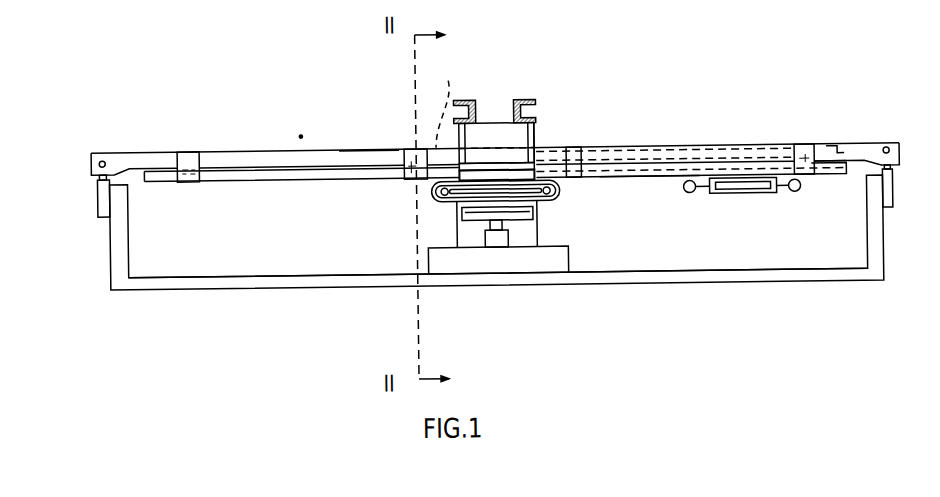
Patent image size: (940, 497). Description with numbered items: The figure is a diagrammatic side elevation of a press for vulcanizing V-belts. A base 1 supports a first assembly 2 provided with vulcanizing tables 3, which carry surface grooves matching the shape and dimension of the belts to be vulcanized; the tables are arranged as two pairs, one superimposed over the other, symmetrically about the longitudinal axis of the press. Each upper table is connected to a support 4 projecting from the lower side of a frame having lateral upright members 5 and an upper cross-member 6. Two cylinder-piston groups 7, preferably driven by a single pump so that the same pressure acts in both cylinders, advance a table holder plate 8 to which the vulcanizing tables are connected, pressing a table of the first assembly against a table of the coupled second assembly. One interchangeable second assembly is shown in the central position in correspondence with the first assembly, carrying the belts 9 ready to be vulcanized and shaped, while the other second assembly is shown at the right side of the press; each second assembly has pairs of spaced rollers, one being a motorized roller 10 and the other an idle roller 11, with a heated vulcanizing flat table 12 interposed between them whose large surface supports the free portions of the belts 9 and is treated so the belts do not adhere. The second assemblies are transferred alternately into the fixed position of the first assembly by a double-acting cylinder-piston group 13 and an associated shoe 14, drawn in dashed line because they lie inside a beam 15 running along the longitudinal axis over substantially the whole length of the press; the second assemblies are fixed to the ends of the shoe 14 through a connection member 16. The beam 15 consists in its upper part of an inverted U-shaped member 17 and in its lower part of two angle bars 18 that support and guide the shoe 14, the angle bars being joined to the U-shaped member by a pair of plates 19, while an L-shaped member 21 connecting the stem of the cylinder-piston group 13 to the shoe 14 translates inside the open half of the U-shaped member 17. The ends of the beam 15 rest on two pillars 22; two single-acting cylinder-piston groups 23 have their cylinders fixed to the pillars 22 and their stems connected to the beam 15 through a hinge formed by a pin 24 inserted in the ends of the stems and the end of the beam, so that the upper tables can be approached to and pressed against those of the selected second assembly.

The base 1 is at (499, 304).
The first assembly 2 is at (540, 142).
The vulcanizing tables 3 is at (540, 160).
The support 4 is at (512, 133).
The lateral upright members 5 is at (541, 128).
The upper cross-member 6 is at (477, 120).
The cylinder-piston groups 7 is at (500, 247).
The table holder plate 8 is at (523, 221).
The belts 9 is at (556, 196).
The motorized roller 10 is at (550, 201).
The idle roller 11 is at (436, 197).
The vulcanizing flat table 12 is at (460, 215).
The double-acting cylinder-piston group 13 is at (665, 150).
The shoe 14 is at (650, 178).
The beam 15 is at (300, 148).
The connection member 16 is at (723, 181).
The inverted U-shaped member 17 is at (360, 151).
The angle bars 18 is at (272, 176).
The plates 19 is at (190, 148).
The L-shaped member 21 is at (437, 104).
The pillars 22 is at (118, 246).
The cylinder-piston groups 23 is at (101, 192).
The pin 24 is at (105, 147).